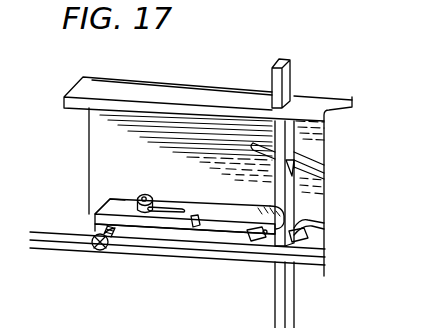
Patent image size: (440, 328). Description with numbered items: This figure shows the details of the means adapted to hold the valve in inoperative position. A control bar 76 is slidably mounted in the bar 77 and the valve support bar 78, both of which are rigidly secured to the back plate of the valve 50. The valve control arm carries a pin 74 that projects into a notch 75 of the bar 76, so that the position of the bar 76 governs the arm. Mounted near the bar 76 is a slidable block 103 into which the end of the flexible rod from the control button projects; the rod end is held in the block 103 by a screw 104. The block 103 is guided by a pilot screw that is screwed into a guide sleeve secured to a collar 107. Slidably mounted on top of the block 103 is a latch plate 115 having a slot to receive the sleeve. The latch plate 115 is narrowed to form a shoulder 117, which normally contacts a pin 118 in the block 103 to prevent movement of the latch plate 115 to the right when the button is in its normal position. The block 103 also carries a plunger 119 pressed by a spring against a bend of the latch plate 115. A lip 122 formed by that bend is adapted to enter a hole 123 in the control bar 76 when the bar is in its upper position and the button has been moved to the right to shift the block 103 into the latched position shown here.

The bar 77 is at (83, 88).
The bar 76 is at (287, 78).
The valve 50 is at (353, 104).
The notch 75 is at (312, 151).
The pin 74 is at (330, 170).
The hole 123 is at (297, 222).
The lip 122 is at (296, 236).
The slidable block 103 is at (148, 232).
The latch plate 115 is at (108, 200).
The shoulder 117 is at (188, 225).
The pin 118 is at (205, 197).
The collar 107 is at (143, 197).
The screw 104 is at (97, 250).
The valve support bar 78 is at (50, 230).
The plunger 119 is at (263, 238).